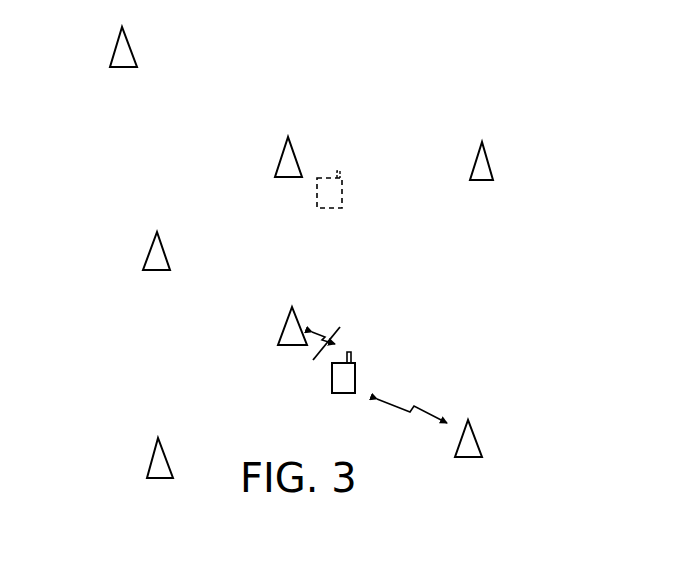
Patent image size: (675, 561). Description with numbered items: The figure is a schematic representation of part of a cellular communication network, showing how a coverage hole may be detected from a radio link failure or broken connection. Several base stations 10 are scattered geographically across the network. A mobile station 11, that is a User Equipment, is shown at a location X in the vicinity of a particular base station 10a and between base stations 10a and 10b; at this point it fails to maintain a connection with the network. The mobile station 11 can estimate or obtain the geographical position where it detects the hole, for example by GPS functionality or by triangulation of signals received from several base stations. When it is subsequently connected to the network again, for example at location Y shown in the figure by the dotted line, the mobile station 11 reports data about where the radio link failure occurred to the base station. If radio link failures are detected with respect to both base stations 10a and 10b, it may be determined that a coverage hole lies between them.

The base station 10 is at (110, 46).
The base station 10a is at (278, 327).
The base station 10b is at (483, 436).
The mobile station 11 is at (317, 196).